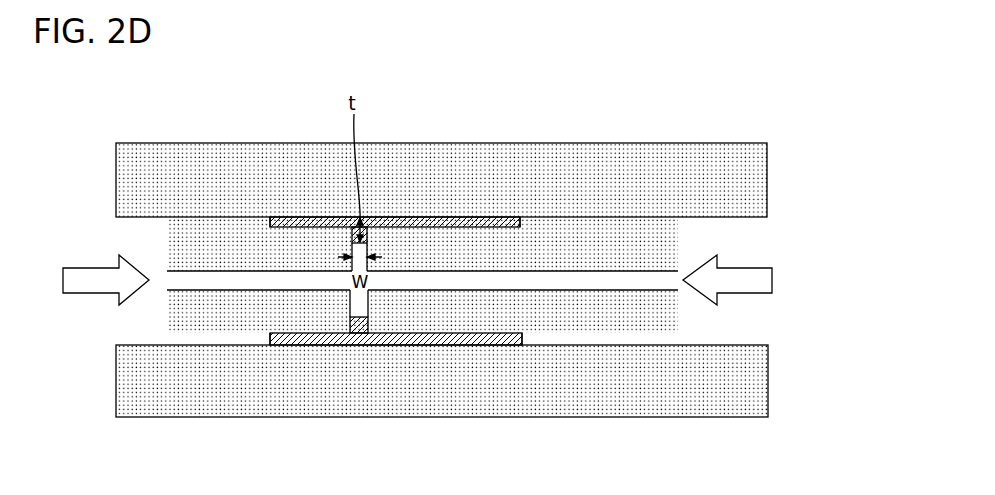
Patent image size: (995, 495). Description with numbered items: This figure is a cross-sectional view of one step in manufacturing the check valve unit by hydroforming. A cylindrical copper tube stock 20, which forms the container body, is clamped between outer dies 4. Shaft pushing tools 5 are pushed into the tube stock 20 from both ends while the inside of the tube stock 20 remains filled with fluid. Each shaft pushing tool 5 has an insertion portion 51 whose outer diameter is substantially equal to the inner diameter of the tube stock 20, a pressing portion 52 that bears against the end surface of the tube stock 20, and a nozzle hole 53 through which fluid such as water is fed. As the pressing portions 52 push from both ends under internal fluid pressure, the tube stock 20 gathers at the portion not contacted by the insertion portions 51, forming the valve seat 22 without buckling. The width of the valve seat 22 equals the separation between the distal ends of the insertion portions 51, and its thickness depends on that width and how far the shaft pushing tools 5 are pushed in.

The outer die 4 is at (713, 165).
The shaft pushing tool 5 is at (178, 320).
The tube stock 20 is at (440, 222).
The valve seat 22 is at (364, 232).
The insertion portion 51 is at (313, 247).
The pressing portion 52 is at (273, 217).
The nozzle hole 53 is at (185, 282).